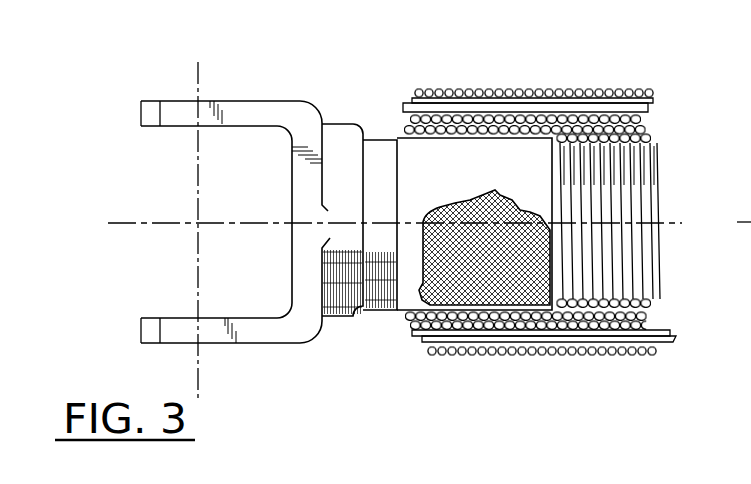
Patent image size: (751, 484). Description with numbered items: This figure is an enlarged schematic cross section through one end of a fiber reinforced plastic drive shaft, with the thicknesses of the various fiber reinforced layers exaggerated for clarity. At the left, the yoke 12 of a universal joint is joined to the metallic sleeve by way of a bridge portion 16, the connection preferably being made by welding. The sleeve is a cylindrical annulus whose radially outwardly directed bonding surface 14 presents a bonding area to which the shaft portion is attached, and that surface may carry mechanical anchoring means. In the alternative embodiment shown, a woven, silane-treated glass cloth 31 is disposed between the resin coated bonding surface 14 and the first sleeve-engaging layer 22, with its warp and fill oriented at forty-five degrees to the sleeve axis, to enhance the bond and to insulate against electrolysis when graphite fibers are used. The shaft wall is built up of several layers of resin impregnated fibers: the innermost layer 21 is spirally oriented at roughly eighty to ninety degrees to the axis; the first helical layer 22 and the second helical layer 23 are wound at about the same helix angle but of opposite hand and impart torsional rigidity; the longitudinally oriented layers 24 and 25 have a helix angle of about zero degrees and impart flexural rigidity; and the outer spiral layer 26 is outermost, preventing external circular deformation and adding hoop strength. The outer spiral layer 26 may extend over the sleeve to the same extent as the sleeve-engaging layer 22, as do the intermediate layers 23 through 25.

The yoke 12 is at (252, 107).
The bonding surface 14 is at (541, 167).
The bridge portion 16 is at (343, 133).
The innermost layer 21 is at (653, 137).
The first helical layer 22 is at (642, 128).
The second helical layer 23 is at (593, 122).
The longitudinally oriented layer 24 is at (547, 110).
The longitudinally oriented layer 25 is at (510, 102).
The outer spiral layer 26 is at (462, 92).
The glass cloth 31 is at (543, 257).